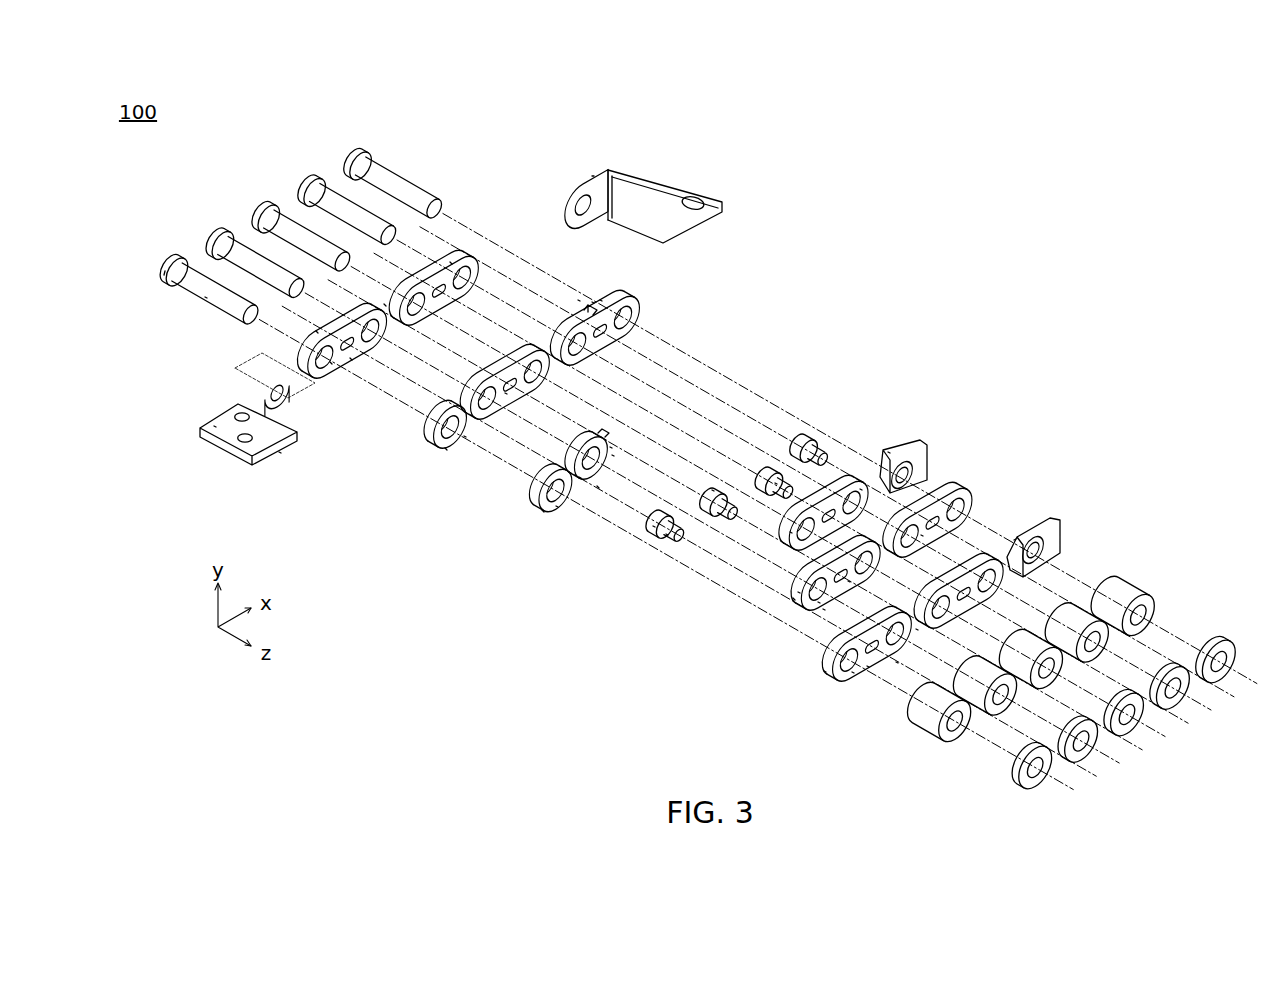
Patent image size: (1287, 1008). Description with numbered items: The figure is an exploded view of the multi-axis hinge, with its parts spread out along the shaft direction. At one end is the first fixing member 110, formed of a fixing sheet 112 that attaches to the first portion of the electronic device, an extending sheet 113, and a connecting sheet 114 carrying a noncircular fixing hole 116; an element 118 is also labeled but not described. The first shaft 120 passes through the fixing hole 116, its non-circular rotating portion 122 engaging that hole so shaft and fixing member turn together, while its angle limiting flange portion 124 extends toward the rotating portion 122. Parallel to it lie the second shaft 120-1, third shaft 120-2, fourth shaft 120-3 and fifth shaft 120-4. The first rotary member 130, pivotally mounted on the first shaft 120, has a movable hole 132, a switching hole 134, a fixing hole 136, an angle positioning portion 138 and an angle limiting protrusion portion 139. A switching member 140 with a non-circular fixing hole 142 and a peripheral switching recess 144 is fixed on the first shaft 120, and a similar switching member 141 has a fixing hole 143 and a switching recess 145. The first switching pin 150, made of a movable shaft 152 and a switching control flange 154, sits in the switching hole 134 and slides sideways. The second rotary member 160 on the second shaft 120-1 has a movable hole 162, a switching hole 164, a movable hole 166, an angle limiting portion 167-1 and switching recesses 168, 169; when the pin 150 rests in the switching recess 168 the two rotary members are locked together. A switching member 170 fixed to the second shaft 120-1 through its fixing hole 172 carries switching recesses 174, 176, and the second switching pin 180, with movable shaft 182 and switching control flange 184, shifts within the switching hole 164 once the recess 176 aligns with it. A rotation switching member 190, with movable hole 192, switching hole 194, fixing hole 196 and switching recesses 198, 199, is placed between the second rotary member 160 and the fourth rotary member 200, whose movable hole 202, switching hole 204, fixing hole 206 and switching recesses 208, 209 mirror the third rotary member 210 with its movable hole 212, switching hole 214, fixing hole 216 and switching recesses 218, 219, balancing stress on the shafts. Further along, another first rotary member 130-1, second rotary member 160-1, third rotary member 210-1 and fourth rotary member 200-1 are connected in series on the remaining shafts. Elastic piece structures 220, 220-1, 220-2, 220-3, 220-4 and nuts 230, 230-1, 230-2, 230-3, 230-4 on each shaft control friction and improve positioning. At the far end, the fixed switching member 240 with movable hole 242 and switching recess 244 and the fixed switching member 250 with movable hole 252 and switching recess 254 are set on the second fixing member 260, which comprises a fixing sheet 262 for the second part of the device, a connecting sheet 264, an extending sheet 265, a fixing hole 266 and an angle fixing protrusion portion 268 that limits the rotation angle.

The first fixing member 110 is at (250, 436).
The fixing sheet 112 is at (216, 422).
The extending sheet 113 is at (278, 453).
The connecting sheet 114 is at (261, 402).
The fixing hole 116 is at (288, 402).
The mounting region 118 is at (266, 357).
The first shaft 120 is at (179, 260).
The second shaft 120-1 is at (225, 234).
The third shaft 120-2 is at (271, 208).
The fourth shaft 120-3 is at (317, 181).
The fifth shaft 120-4 is at (363, 155).
The non-circular rotating portion 122 is at (207, 298).
The angle limiting flange portion 124 is at (165, 265).
The first rotary member 130 is at (346, 382).
The another first rotary member 130-1 is at (450, 262).
The movable hole 132 is at (332, 366).
The switching hole 134 is at (352, 360).
The fixing hole 136 is at (402, 297).
The angle positioning portion 138 is at (318, 333).
The angle limiting protrusion portion 139 is at (385, 306).
The switching member 140 is at (426, 450).
The switching member 141 is at (544, 512).
The fixing hole 142 is at (446, 450).
The fixing hole 143 is at (558, 508).
The switching recess 144 is at (465, 437).
The switching recess 145 is at (580, 478).
The first switching pin 150 is at (626, 571).
The movable shaft 152 is at (668, 535).
The switching control flange 154 is at (655, 527).
The second rotary member 160 is at (596, 292).
The another second rotary member 160-1 is at (606, 440).
The movable hole 162 is at (501, 528).
The switching hole 164 is at (578, 300).
The movable hole 166 is at (592, 302).
The angle limiting portion 167-1 is at (502, 365).
The switching recess 168 is at (506, 393).
The switching recess 169 is at (600, 300).
The switching member 170 is at (635, 427).
The fixing hole 172 is at (615, 457).
The switching recess 174 is at (598, 488).
The switching recess 176 is at (612, 448).
The second switching pin 180 is at (767, 440).
The movable shaft 182 is at (775, 483).
The switching control flange 184 is at (713, 490).
The rotation switching member 190 is at (793, 553).
The movable hole 192 is at (800, 593).
The switching hole 194 is at (801, 430).
The fixing hole 196 is at (785, 523).
The switching recess 198 is at (792, 533).
The switching recess 199 is at (862, 490).
The fourth rotary member 200 is at (801, 620).
The another fourth rotary member 200-1 is at (982, 513).
The movable hole 202 is at (820, 603).
The switching hole 204 is at (825, 610).
The fixing hole 206 is at (850, 582).
The switching recess 208 is at (795, 600).
The switching recess 209 is at (923, 536).
The third rotary member 210 is at (844, 707).
The another third rotary member 210-1 is at (980, 602).
The movable hole 212 is at (853, 673).
The switching hole 214 is at (868, 667).
The fixing hole 216 is at (897, 663).
The switching recess 218 is at (825, 672).
The switching recess 219 is at (917, 630).
The elastic piece structure 220 is at (953, 737).
The elastic piece structure 220-1 is at (1000, 711).
The elastic piece structure 220-2 is at (1047, 684).
The elastic piece structure 220-3 is at (1093, 658).
The elastic piece structure 220-4 is at (1139, 632).
The nut 230 is at (1045, 780).
The nut 230-1 is at (1091, 754).
The nut 230-2 is at (1137, 727).
The nut 230-3 is at (1183, 701).
The nut 230-4 is at (1229, 674).
The fixed switching member 240 is at (1062, 535).
The movable hole 242 is at (1060, 523).
The switching recess 244 is at (1015, 540).
The fixed switching member 250 is at (935, 443).
The movable hole 252 is at (917, 474).
The switching recess 254 is at (890, 453).
The second fixing member 260 is at (644, 178).
The fixing sheet 262 is at (687, 192).
The connecting sheet 264 is at (593, 176).
The extending sheet 265 is at (635, 178).
The fixing hole 266 is at (612, 158).
The angle fixing protrusion portion 268 is at (573, 183).